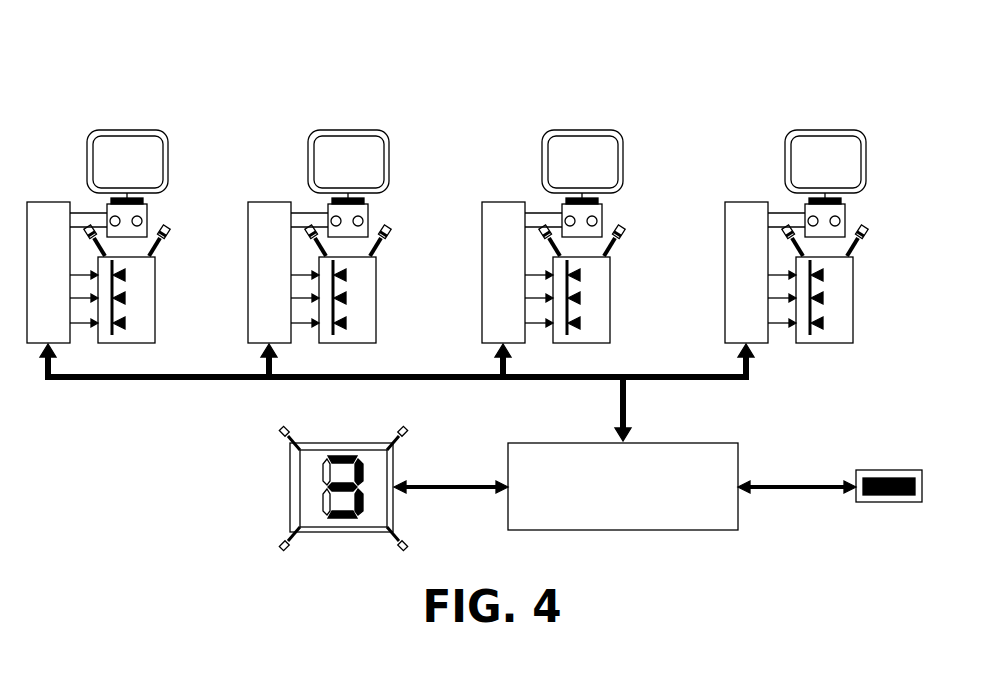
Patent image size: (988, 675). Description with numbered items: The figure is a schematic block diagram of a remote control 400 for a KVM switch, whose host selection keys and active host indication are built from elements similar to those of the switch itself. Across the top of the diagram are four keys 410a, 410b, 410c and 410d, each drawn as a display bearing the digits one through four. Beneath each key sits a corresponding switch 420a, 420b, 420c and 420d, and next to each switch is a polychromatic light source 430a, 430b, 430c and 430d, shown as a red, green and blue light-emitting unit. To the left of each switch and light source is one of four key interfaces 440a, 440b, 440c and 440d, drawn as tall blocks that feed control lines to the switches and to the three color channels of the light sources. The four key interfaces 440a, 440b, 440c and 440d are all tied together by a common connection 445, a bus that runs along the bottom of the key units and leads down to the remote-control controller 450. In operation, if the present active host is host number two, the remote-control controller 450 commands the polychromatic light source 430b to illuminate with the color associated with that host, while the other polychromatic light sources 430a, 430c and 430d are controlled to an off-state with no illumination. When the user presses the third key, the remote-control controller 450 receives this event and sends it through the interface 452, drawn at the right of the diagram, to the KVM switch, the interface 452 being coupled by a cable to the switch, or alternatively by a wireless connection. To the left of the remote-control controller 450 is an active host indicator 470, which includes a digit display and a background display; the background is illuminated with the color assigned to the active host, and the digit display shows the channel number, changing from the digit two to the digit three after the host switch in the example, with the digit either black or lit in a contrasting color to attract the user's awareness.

The remote control 400 is at (136, 74).
The key 410a is at (87, 131).
The key 410b is at (320, 141).
The key 410c is at (554, 141).
The key 410d is at (797, 141).
The switch 420a is at (147, 220).
The switch 420b is at (370, 224).
The switch 420c is at (603, 224).
The switch 420d is at (847, 224).
The polychromatic light source 430a is at (155, 295).
The polychromatic light source 430b is at (384, 300).
The polychromatic light source 430c is at (617, 300).
The polychromatic light source 430d is at (861, 300).
The key interface 440a is at (38, 202).
The key interface 440b is at (283, 247).
The key interface 440c is at (517, 247).
The key interface 440d is at (760, 247).
The communication bus 445 is at (618, 409).
The remote-control controller 450 is at (738, 443).
The interface 452 is at (878, 470).
The active host indicator 470 is at (289, 472).